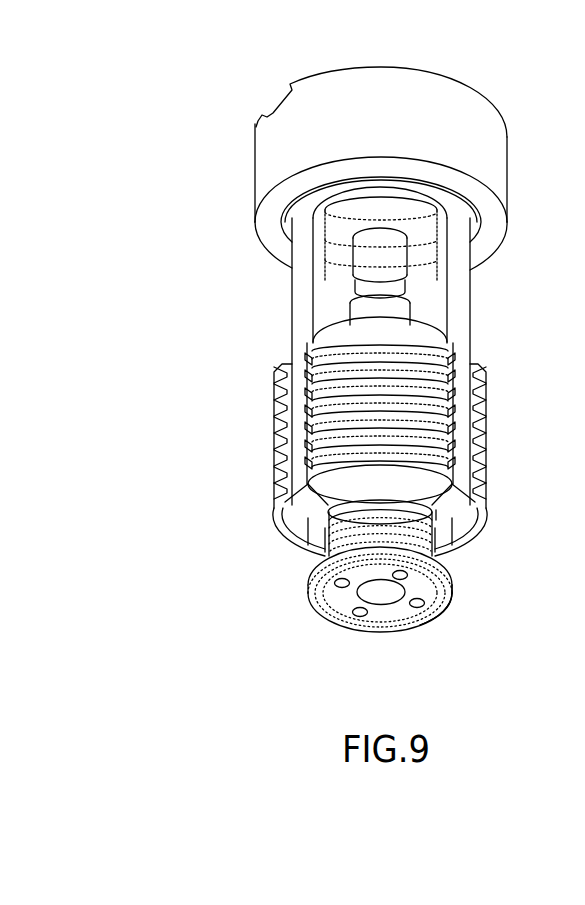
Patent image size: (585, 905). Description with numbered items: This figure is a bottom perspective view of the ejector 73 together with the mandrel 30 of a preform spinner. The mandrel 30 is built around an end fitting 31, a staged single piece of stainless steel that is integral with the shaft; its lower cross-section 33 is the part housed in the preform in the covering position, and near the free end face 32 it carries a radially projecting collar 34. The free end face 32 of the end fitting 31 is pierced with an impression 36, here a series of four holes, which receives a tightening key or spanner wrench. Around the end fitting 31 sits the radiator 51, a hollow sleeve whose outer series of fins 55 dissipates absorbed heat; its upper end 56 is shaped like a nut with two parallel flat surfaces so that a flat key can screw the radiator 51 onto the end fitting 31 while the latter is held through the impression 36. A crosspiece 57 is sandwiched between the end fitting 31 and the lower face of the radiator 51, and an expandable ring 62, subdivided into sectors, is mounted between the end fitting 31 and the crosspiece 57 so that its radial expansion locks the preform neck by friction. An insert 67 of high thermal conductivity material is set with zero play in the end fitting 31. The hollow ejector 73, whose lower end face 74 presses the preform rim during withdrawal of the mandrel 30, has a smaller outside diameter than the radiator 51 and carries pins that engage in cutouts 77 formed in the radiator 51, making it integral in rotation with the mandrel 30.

The ejector 73 is at (470, 281).
The upper end of the radiator 56 is at (403, 322).
The fins 55 is at (312, 392).
The radiator 51 is at (487, 402).
The cutouts 77 is at (281, 488).
The lower end face 74 is at (303, 498).
The crosspiece 57 is at (438, 516).
The expandable ring 62 is at (312, 549).
The mandrel 30 is at (300, 588).
The collar 34 is at (452, 583).
The face 32 is at (398, 617).
The end fitting 31 is at (438, 605).
The lower cross-section 33 is at (470, 616).
The impression 36 is at (360, 613).
The insert 67 is at (383, 593).